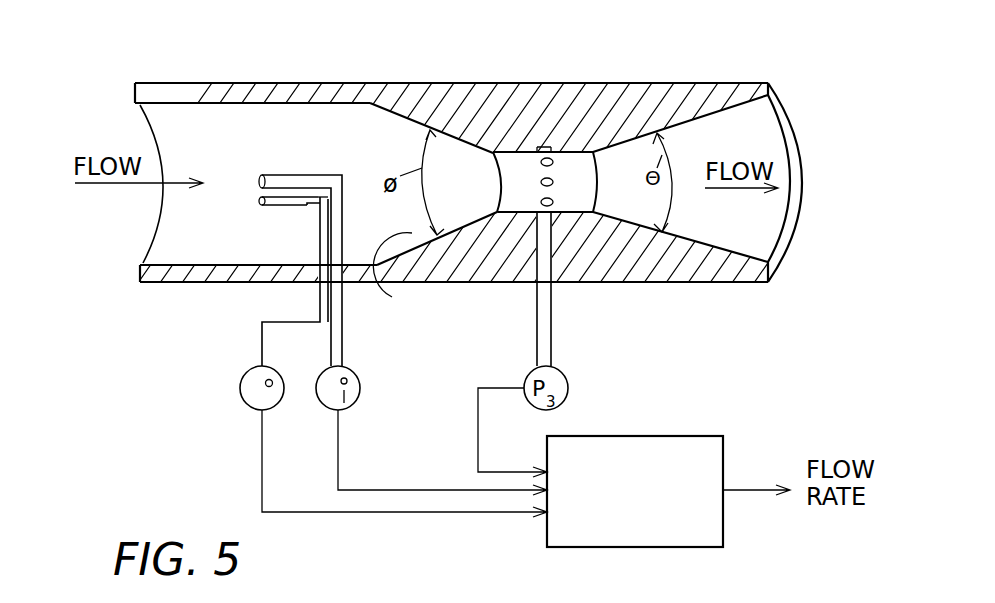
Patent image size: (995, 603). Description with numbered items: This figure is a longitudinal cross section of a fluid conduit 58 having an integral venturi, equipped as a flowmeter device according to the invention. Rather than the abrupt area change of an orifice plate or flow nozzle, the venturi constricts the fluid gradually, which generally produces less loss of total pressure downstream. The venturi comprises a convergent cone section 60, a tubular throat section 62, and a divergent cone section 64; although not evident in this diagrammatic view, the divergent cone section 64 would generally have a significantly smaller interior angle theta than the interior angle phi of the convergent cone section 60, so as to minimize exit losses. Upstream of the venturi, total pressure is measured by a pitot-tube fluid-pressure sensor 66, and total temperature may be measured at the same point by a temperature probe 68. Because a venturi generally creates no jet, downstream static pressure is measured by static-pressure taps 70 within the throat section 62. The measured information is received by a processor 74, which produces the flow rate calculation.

The conduit wall 58 is at (367, 82).
The convergent cone section 60 is at (392, 297).
The throat section 62 is at (568, 163).
The divergent cone section 64 is at (760, 130).
The pitot-tube fluid-pressure sensor 66 is at (310, 173).
The temperature probe 68 is at (283, 207).
The static-pressure taps 70 is at (542, 160).
The processor 74 is at (623, 435).